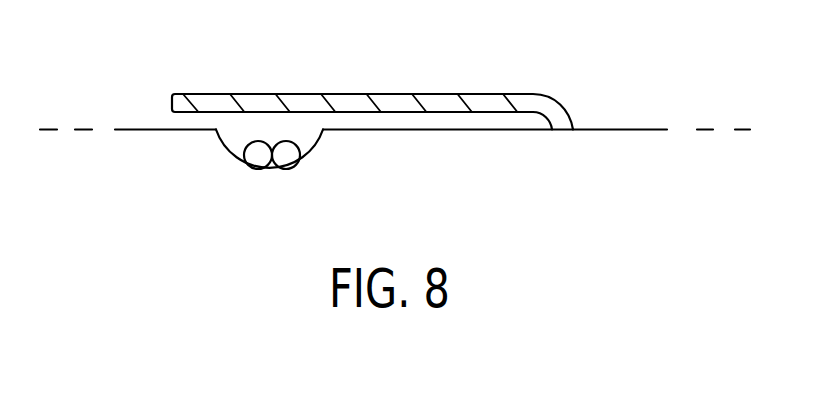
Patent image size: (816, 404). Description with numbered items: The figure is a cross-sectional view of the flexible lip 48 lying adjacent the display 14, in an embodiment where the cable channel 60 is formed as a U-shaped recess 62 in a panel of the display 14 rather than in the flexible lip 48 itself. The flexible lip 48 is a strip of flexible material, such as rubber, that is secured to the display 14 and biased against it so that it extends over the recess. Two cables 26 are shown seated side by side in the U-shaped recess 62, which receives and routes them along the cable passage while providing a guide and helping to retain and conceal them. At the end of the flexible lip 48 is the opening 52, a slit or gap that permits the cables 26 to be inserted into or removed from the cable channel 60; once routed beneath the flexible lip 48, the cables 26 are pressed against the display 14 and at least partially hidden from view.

The display 14 is at (603, 130).
The cables 26 is at (279, 123).
The flexible lip 48 is at (355, 94).
The opening 52 is at (170, 122).
The cable channel 60 is at (233, 184).
The U-shaped recess 62 is at (275, 170).